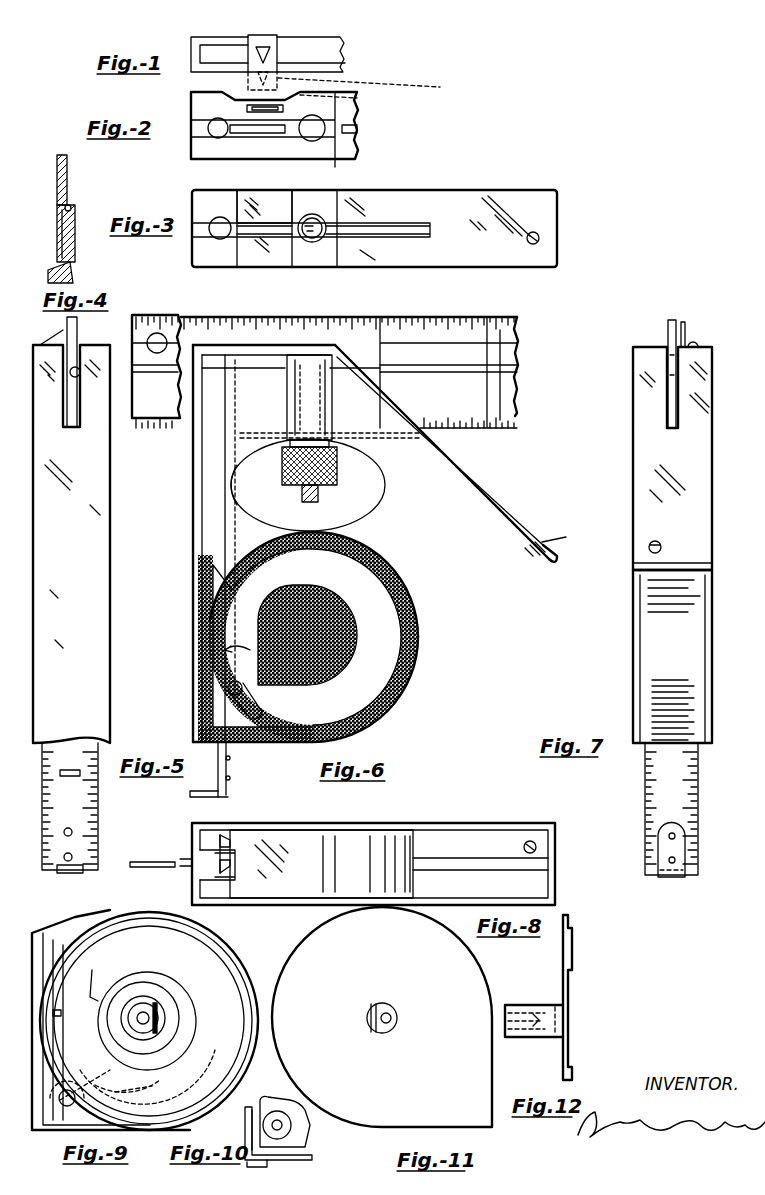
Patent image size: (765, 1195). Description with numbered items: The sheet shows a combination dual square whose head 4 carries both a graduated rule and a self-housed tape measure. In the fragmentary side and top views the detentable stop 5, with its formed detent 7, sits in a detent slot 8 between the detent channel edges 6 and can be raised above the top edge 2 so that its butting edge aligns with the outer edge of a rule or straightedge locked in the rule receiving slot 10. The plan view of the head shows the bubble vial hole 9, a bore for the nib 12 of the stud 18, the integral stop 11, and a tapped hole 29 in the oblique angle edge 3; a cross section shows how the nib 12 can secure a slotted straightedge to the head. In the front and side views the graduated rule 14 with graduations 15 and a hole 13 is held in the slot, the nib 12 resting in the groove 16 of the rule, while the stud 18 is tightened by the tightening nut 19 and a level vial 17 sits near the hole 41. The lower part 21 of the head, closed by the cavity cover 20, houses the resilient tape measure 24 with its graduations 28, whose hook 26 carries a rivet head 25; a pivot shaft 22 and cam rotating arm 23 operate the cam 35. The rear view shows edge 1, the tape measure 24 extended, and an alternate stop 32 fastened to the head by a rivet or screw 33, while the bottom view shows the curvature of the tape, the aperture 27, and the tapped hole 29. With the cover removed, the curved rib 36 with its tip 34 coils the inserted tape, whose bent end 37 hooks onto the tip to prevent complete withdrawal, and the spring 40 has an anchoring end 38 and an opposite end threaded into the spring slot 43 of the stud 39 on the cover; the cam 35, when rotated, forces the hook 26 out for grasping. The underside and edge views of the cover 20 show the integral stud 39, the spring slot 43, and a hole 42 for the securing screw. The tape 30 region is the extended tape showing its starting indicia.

In FIG. 3, the edge 1 is at (188, 247).
In FIG. 5, the edge 1 is at (98, 463).
In FIG. 6, the edge 1 is at (188, 593).
In FIG. 3, the top edge 2 is at (335, 205).
In FIG. 6, the top edge 2 is at (337, 342).
In FIG. 3, the oblique angle edge 3 is at (448, 200).
In FIG. 6, the oblique angle edge 3 is at (490, 490).
In FIG. 7, the oblique angle edge 3 is at (653, 443).
In FIG. 1, the head 4 is at (347, 52).
In FIG. 2, the head 4 is at (367, 117).
In FIG. 3, the head 4 is at (513, 187).
In FIG. 7, the head 4 is at (630, 627).
In FIG. 9, the head 4 is at (53, 1133).
In FIG. 10, the head 4 is at (308, 1153).
In FIG. 1, the detentable stop 5 is at (364, 87).
In FIG. 2, the detentable stop 5 is at (357, 100).
In FIG. 1, the detent channel edges 6 is at (280, 42).
In FIG. 1, the formed detent 7 is at (245, 53).
In FIG. 2, the detent slot 8 is at (240, 107).
In FIG. 3, the bubble vial hole 9 is at (225, 230).
In FIG. 3, the rule receiving slot 10 is at (360, 237).
In FIG. 3, the stop 11 is at (252, 202).
In FIG. 5, the stop 11 is at (63, 317).
In FIG. 3, the nib 12 is at (315, 237).
In FIG. 4, the nib 12 is at (78, 203).
In FIG. 5, the nib 12 is at (78, 368).
In FIG. 6, the hole 13 is at (162, 338).
In FIG. 5, the graduated rule 14 is at (72, 372).
In FIG. 6, the graduated rule 14 is at (218, 345).
In FIG. 7, the graduated rule 14 is at (666, 325).
In FIG. 8, the graduated rule 14 is at (148, 857).
In FIG. 6, the graduations 15 is at (525, 320).
In FIG. 6, the groove 16 is at (500, 370).
In FIG. 6, the level vial 17 is at (240, 482).
In FIG. 4, the stud 18 is at (78, 267).
In FIG. 6, the stud 18 is at (320, 500).
In FIG. 6, the tightening nut 19 is at (342, 467).
In FIG. 6, the cavity cover 20 is at (380, 608).
In FIG. 11, the cavity cover 20 is at (458, 980).
In FIG. 12, the cavity cover 20 is at (577, 953).
In FIG. 6, the lower part of head 21 is at (415, 678).
In FIG. 7, the lower part of head 21 is at (658, 657).
In FIG. 6, the pivot shaft 22 is at (242, 688).
In FIG. 9, the pivot shaft 22 is at (132, 1097).
In FIG. 6, the cam rotating arm 23 is at (258, 710).
In FIG. 5, the tape measure 24 is at (103, 803).
In FIG. 7, the tape measure 24 is at (638, 850).
In FIG. 8, the tape measure 24 is at (230, 838).
In FIG. 9, the tape measure 24 is at (235, 930).
In FIG. 6, the rivet head 25 is at (233, 763).
In FIG. 9, the rivet head 25 is at (68, 1092).
In FIG. 5, the hook 26 is at (63, 877).
In FIG. 6, the hook 26 is at (235, 795).
In FIG. 9, the hook 26 is at (63, 1083).
In FIG. 10, the hook 26 is at (273, 1168).
In FIG. 8, the aperture 27 is at (233, 890).
In FIG. 5, the graduations 28 is at (90, 847).
In FIG. 3, the tapped hole 29 is at (543, 235).
In FIG. 7, the tapped hole 29 is at (645, 545).
In FIG. 8, the tapped hole 29 is at (528, 842).
In FIG. 7, the tape 30 is at (638, 807).
In FIG. 7, the alternate stop 32 is at (683, 313).
In FIG. 7, the rivet or screw 33 is at (695, 338).
In FIG. 9, the tip of curved rib 34 is at (55, 1012).
In FIG. 9, the cam 35 is at (127, 1081).
In FIG. 10, the cam 35 is at (293, 1123).
In FIG. 9, the curved rib 36 is at (118, 1077).
In FIG. 9, the bent end 37 is at (97, 983).
In FIG. 9, the anchoring end 38 is at (135, 980).
In FIG. 9, the stud 39 is at (163, 1017).
In FIG. 11, the stud 39 is at (372, 1037).
In FIG. 12, the stud 39 is at (528, 1040).
In FIG. 9, the spring 40 is at (173, 990).
In FIG. 6, the hole 41 is at (368, 500).
In FIG. 11, the hole 42 is at (372, 1027).
In FIG. 4, the spring slot 43 is at (70, 173).
In FIG. 9, the spring slot 43 is at (162, 1027).
In FIG. 11, the spring slot 43 is at (373, 1003).